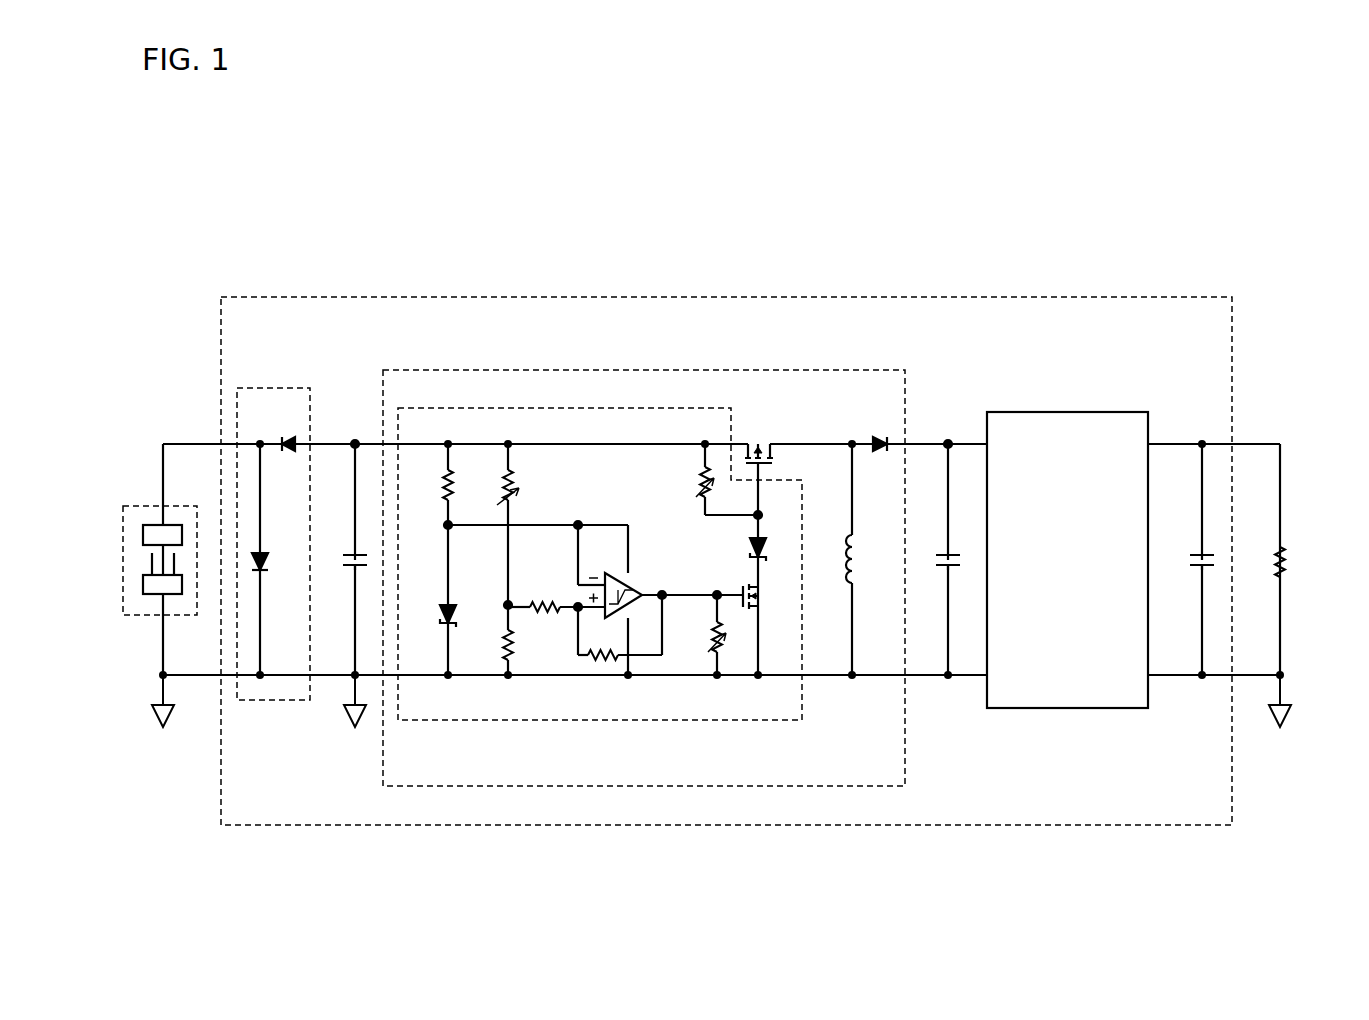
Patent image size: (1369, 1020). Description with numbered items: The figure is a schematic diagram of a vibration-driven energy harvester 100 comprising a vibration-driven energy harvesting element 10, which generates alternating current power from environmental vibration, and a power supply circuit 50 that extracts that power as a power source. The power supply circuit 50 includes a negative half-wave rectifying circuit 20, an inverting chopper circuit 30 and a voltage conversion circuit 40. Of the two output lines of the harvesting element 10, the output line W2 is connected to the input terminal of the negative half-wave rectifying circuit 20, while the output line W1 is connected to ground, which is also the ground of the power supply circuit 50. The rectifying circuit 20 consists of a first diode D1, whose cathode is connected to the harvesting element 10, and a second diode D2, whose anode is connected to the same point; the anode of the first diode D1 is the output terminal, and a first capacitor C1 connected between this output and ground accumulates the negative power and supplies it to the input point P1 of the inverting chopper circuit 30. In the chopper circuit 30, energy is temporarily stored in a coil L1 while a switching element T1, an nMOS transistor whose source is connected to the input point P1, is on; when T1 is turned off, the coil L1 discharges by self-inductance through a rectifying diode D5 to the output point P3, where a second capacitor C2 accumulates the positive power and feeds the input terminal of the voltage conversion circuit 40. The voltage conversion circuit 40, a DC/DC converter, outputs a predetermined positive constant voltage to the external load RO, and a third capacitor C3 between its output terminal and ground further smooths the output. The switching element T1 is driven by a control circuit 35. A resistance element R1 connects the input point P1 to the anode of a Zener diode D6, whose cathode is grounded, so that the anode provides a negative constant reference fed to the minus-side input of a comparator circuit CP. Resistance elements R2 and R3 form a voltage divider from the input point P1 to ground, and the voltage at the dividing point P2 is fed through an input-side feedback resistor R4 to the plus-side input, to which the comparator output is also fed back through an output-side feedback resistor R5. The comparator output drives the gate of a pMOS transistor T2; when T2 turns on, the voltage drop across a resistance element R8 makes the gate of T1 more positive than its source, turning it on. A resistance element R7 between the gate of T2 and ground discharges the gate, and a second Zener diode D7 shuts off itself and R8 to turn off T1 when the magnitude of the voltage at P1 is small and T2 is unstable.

The vibration-driven energy harvester 100 is at (537, 222).
The vibration-driven energy harvesting element 10 is at (136, 499).
The negative half-wave rectifying circuit 20 is at (273, 383).
The inverting chopper circuit 30 is at (535, 365).
The control circuit 35 is at (561, 727).
The voltage conversion circuit 40 is at (1044, 405).
The power supply circuit 50 is at (735, 293).
The output line W1 is at (203, 680).
The output line W2 is at (197, 443).
The first diode D1 is at (288, 430).
The second diode D2 is at (274, 559).
The rectifying diode D5 is at (879, 430).
The Zener diode D6 is at (433, 600).
The second Zener diode D7 is at (738, 551).
The first capacitor C1 is at (343, 559).
The second capacitor C2 is at (935, 559).
The third capacitor C3 is at (1189, 559).
The input point P1 is at (351, 428).
The voltage dividing point P2 is at (492, 604).
The output point P3 is at (942, 428).
The resistance element R1 is at (432, 484).
The resistance element R2 is at (492, 524).
The resistance element R3 is at (490, 640).
The input-side feedback resistor R4 is at (556, 594).
The output-side feedback resistor R5 is at (620, 627).
The resistance element R7 is at (700, 635).
The resistance element R8 is at (708, 479).
The external load RO is at (1260, 566).
The comparator circuit CP is at (638, 582).
The switching element T1 is at (758, 464).
The pMOS transistor T2 is at (768, 629).
The coil L1 is at (834, 559).